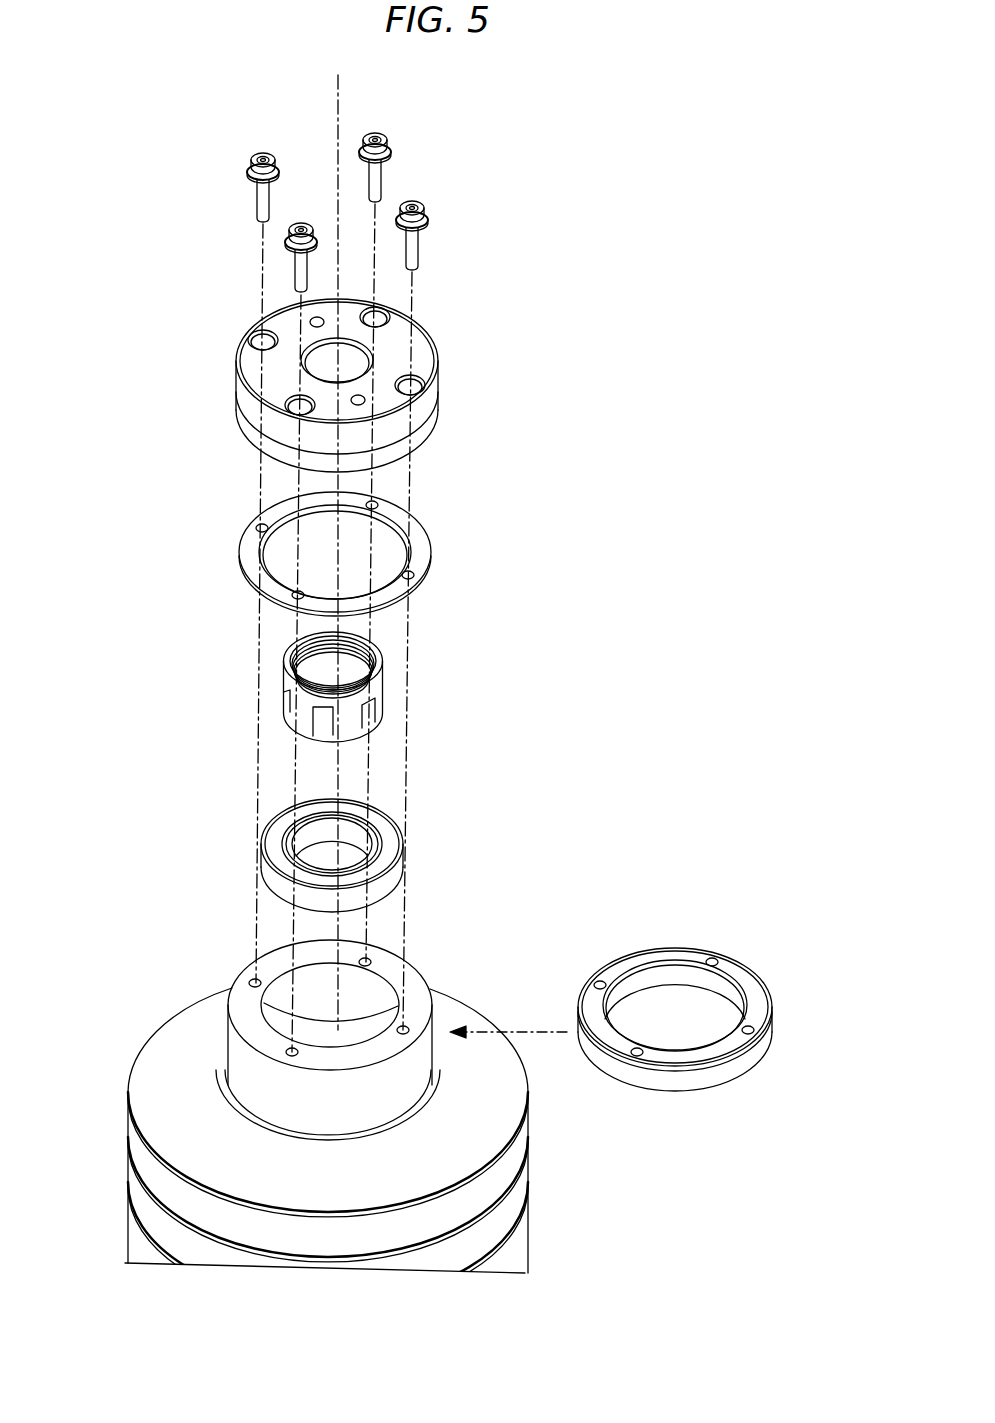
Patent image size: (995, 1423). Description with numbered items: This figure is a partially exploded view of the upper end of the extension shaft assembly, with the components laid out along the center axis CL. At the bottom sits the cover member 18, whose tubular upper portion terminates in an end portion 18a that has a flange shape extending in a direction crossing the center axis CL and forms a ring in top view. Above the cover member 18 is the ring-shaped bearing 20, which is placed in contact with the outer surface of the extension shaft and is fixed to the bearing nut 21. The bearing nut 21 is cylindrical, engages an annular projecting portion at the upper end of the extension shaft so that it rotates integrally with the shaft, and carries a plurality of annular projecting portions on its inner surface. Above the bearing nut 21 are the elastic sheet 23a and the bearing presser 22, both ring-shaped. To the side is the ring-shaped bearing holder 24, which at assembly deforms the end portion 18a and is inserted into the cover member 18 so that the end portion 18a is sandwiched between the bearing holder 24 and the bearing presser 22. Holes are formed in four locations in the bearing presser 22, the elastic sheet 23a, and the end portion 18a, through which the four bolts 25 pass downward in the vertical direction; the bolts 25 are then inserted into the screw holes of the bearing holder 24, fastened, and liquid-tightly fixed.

The center axis CL is at (340, 91).
The bolts 25 is at (258, 191).
The bearing presser 22 is at (432, 389).
The elastic sheet 23a is at (425, 548).
The bearing nut 21 is at (380, 684).
The bearing 20 is at (388, 878).
The cover member 18 is at (503, 1178).
The end portion 18a is at (412, 988).
The bearing holder 24 is at (693, 955).